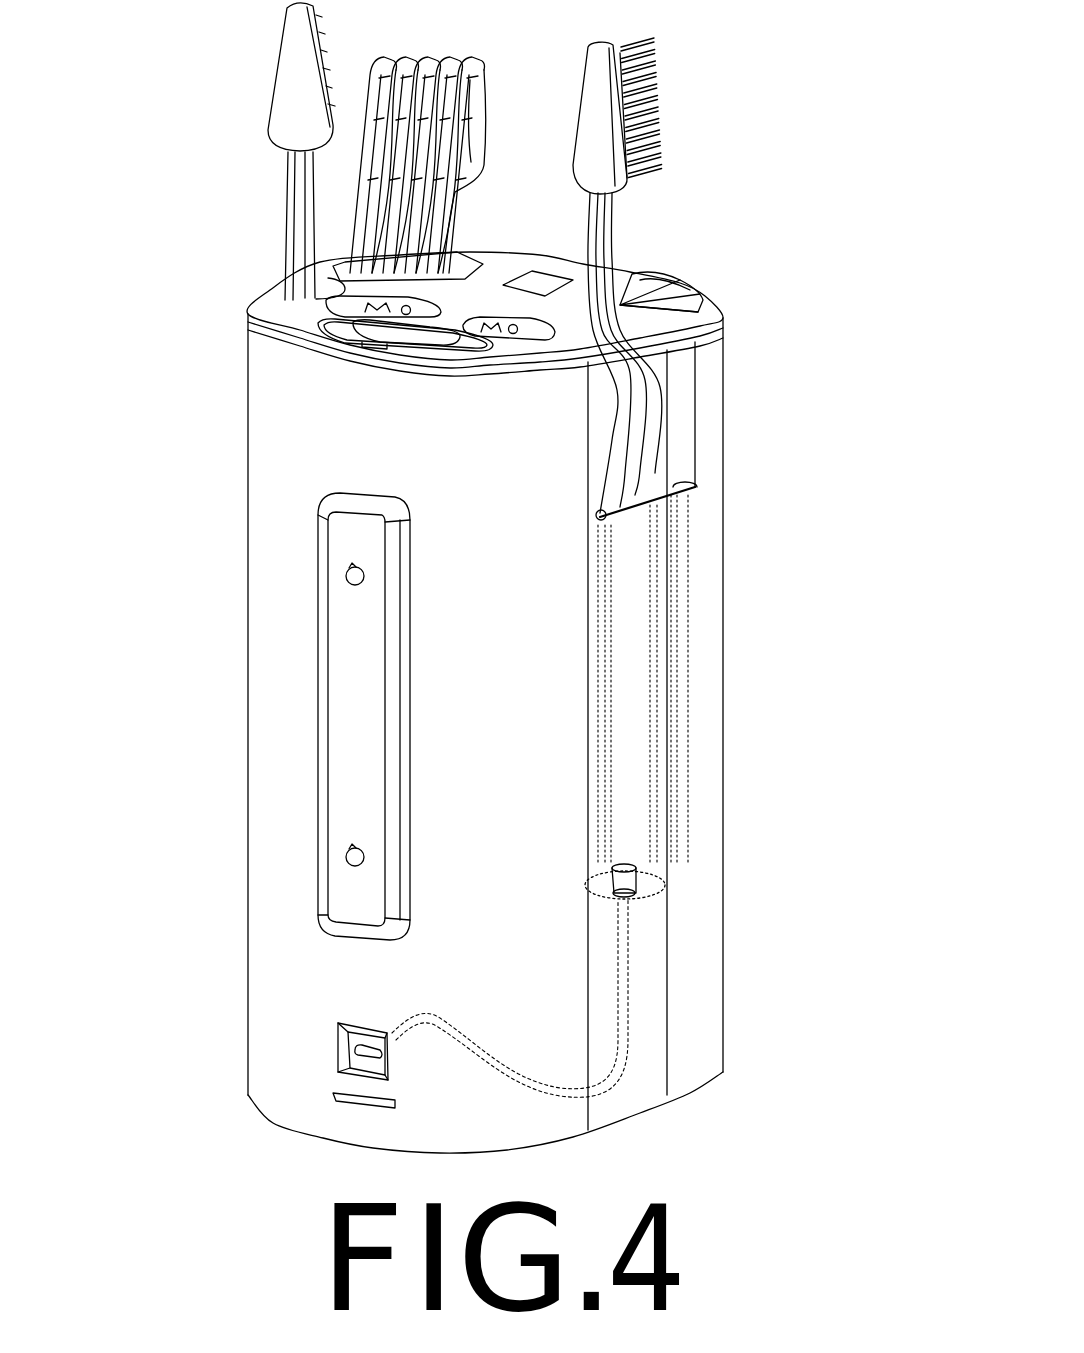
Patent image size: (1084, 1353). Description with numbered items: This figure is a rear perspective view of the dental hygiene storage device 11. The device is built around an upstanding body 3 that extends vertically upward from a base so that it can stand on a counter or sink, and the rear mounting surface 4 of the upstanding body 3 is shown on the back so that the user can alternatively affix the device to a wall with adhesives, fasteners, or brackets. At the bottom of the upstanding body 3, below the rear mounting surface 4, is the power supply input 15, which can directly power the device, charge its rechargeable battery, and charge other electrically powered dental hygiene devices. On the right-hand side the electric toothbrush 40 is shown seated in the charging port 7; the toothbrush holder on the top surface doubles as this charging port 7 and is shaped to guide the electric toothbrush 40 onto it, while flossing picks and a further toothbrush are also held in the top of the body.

The upstanding body 3 is at (282, 727).
The rear mounting surface 4 is at (352, 800).
The charging port 7 is at (622, 882).
The dental hygiene storage device 11 is at (502, 578).
The power supply input 15 is at (347, 1070).
The electric toothbrush 40 is at (633, 195).